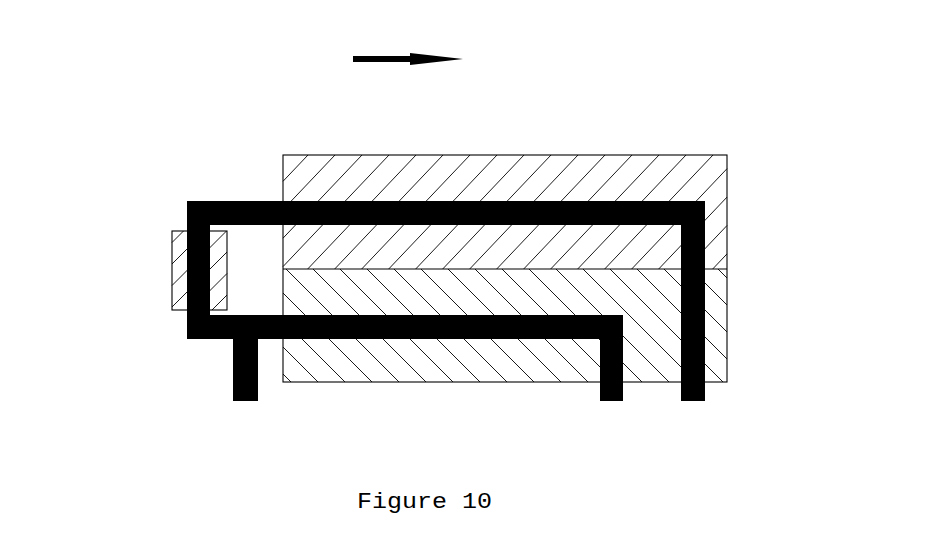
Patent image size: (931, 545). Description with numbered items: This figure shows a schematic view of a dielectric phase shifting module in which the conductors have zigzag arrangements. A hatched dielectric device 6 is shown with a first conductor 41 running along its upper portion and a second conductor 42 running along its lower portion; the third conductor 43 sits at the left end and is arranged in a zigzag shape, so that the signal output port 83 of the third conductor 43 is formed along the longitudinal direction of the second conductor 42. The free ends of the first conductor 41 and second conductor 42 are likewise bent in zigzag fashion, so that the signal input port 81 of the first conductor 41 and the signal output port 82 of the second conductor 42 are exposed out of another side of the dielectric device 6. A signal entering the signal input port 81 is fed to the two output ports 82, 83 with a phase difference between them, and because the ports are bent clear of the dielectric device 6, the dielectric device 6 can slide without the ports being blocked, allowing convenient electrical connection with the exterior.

The dielectric device 6 is at (347, 170).
The first conductor 41 is at (640, 200).
The second conductor 42 is at (350, 340).
The third conductor 43 is at (183, 273).
The signal input port 81 is at (696, 314).
The signal output port 82 is at (617, 376).
The signal output port 83 is at (249, 387).